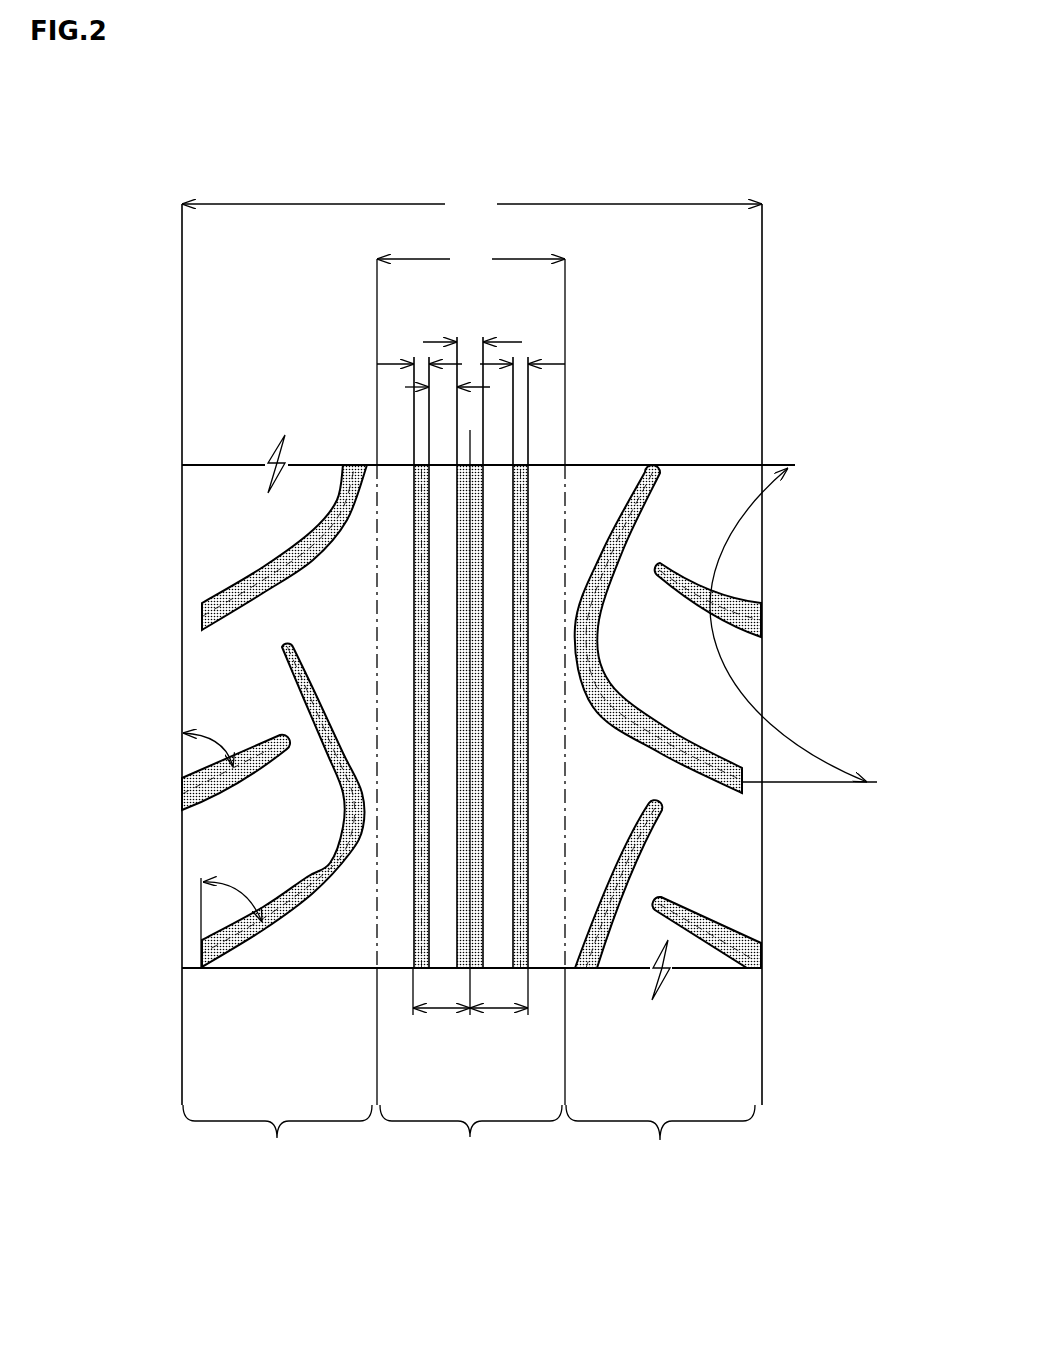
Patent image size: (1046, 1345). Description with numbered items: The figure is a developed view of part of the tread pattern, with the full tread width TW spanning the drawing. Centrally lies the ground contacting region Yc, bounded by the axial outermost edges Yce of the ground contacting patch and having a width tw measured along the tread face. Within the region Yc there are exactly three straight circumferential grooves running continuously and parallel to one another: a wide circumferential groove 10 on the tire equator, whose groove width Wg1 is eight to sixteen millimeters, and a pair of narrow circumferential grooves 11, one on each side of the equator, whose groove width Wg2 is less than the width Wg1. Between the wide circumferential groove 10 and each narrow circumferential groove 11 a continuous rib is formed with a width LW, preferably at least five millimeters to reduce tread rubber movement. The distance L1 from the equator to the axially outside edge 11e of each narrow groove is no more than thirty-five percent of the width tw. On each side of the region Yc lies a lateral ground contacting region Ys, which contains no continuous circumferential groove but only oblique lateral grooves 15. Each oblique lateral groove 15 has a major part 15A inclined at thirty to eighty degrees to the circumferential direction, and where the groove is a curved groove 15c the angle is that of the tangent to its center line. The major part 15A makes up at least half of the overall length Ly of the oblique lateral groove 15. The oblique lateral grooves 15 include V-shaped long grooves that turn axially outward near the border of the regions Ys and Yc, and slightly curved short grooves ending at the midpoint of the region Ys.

The wide circumferential groove 10 is at (483, 462).
The narrow circumferential grooves 11 is at (415, 462).
The axially outside edge of narrow circumferential groove 11e is at (412, 935).
The oblique lateral grooves 15 is at (209, 865).
The major part of oblique lateral groove 15A is at (222, 787).
The curved groove 15c is at (303, 882).
The tread width TW is at (472, 206).
The width of ground contacting region tw is at (471, 259).
The groove width of wide circumferential groove Wg1 is at (472, 325).
The groove width of narrow circumferential grooves Wg2 is at (422, 363).
The rib width LW is at (447, 389).
The distance from tire equator to axially outside edge L1 is at (470, 1003).
The overall length of oblique lateral groove Ly is at (790, 735).
The axial outermost edges of ground contacting patch Yce is at (377, 905).
The lateral ground contacting region Ys is at (469, 1140).
The ground contacting region Yc is at (471, 1139).